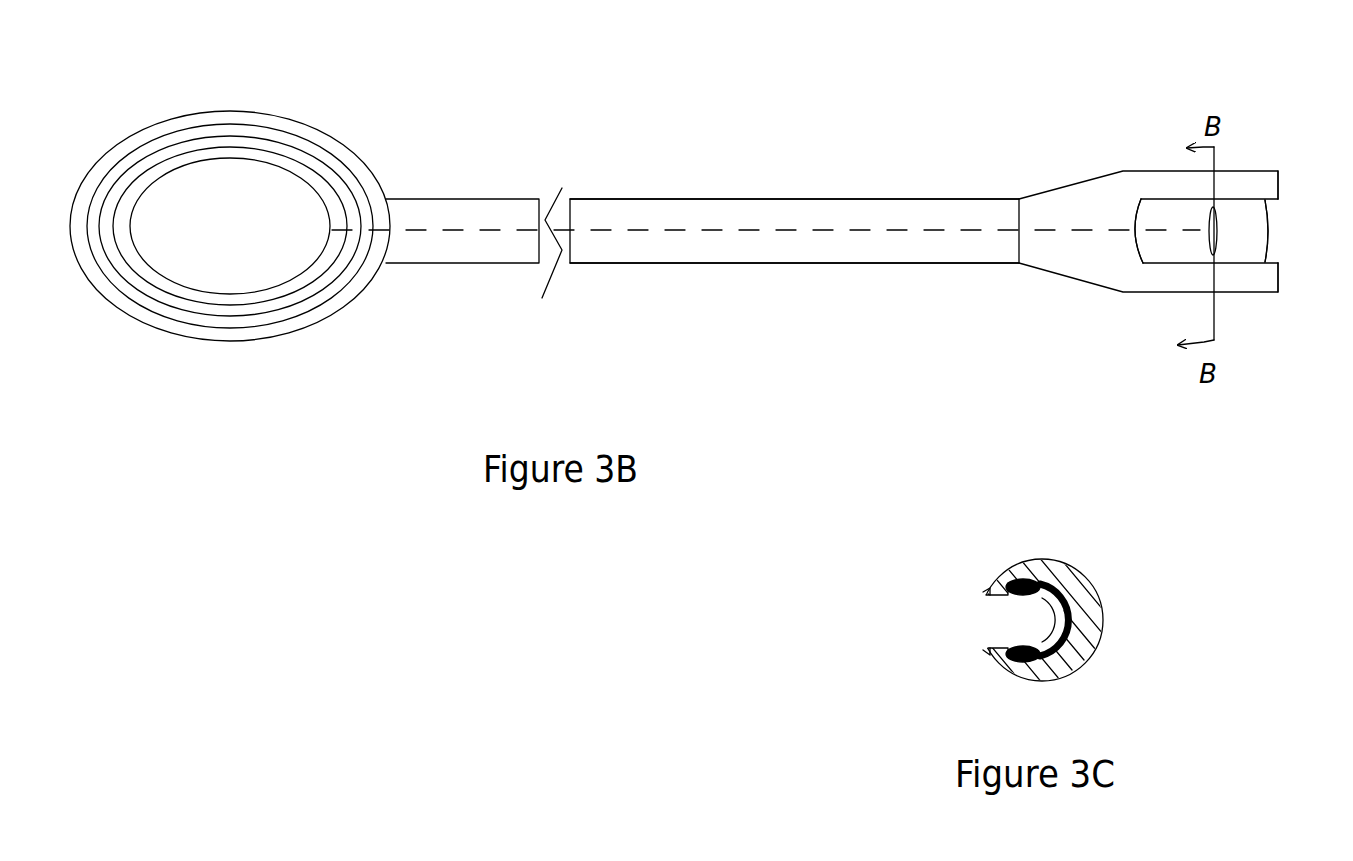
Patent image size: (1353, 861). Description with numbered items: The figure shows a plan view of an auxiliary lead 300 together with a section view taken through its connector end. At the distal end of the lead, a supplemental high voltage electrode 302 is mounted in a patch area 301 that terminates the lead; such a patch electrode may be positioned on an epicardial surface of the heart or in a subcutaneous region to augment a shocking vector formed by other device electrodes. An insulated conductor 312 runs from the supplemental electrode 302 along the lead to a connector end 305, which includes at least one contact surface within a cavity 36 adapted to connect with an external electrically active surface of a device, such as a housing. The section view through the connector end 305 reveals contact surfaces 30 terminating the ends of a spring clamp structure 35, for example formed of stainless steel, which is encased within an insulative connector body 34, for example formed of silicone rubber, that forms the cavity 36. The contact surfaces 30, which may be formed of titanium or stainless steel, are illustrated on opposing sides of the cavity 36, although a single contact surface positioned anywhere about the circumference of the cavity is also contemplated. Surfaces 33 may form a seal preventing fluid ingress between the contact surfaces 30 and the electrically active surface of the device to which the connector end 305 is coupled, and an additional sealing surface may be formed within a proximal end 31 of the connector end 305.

In FIG. 3B, the auxiliary lead 300 is at (623, 97).
In FIG. 3B, the patch area 301 is at (102, 167).
In FIG. 3B, the supplemental high voltage electrode 302 is at (318, 152).
In FIG. 3B, the connector end 305 is at (1030, 150).
In FIG. 3B, the insulated conductor 312 is at (727, 231).
In FIG. 3B, the cavity 36 is at (1177, 218).
In FIG. 3C, the cavity 36 is at (1020, 618).
In FIG. 3B, the proximal end 31 is at (1278, 186).
In FIG. 3C, the contact surfaces 30 is at (1028, 582).
In FIG. 3C, the surfaces 33 is at (985, 594).
In FIG. 3C, the insulative connector body 34 is at (1084, 634).
In FIG. 3C, the spring clamp structure 35 is at (1063, 604).